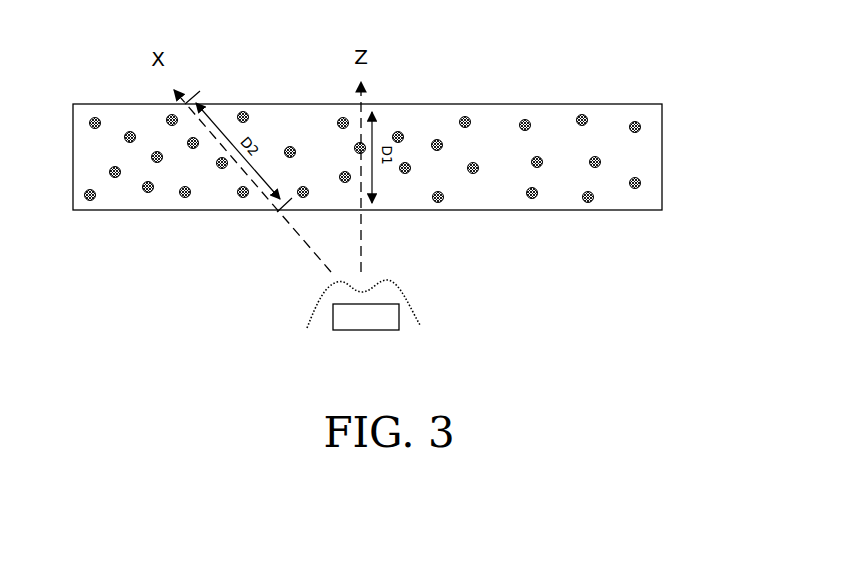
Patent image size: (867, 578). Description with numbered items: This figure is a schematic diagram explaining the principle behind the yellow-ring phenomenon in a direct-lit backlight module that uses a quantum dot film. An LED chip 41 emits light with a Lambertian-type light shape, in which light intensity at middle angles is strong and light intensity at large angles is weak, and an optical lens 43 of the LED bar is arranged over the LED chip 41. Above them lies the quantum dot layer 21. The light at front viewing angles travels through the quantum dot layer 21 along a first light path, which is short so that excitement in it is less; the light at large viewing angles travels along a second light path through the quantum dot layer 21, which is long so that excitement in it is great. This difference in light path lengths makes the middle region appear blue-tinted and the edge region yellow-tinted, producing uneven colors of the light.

The quantum dot layer 21 is at (667, 106).
The LED chip 41 is at (399, 318).
The optical lens 43 is at (337, 293).